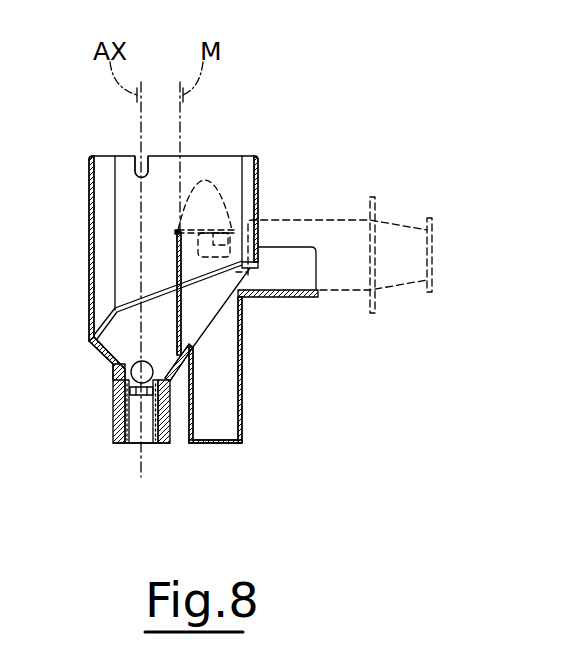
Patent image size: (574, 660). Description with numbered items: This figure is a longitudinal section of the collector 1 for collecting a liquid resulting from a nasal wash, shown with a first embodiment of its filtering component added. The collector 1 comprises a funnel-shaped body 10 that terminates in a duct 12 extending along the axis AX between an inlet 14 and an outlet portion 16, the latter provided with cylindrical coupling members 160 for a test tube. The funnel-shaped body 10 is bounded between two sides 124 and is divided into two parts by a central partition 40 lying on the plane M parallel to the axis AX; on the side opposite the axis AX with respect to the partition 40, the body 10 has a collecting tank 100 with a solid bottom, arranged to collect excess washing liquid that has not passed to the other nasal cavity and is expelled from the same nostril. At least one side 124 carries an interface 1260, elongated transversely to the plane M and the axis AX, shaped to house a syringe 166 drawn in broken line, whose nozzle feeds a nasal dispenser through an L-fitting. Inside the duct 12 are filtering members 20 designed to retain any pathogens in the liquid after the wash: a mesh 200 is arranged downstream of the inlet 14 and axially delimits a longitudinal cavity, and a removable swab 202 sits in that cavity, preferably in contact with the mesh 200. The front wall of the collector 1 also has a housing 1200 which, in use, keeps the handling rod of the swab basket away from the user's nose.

The collector 1 is at (341, 92).
The sides 124 is at (88, 208).
The housing 1200 is at (151, 158).
The syringe 166 is at (333, 220).
The funnel-shaped body 10 is at (167, 313).
The central partition 40 is at (183, 302).
The interface 1260 is at (308, 297).
The collecting tank/well 100 is at (208, 413).
The filtering members 20 is at (100, 374).
The cylindrical coupling members 160 is at (102, 432).
The duct 12 is at (172, 420).
The mesh 200 is at (128, 396).
The removable swab 202 is at (155, 365).
The inlet 14 is at (142, 338).
The outlet portion 16 is at (150, 470).